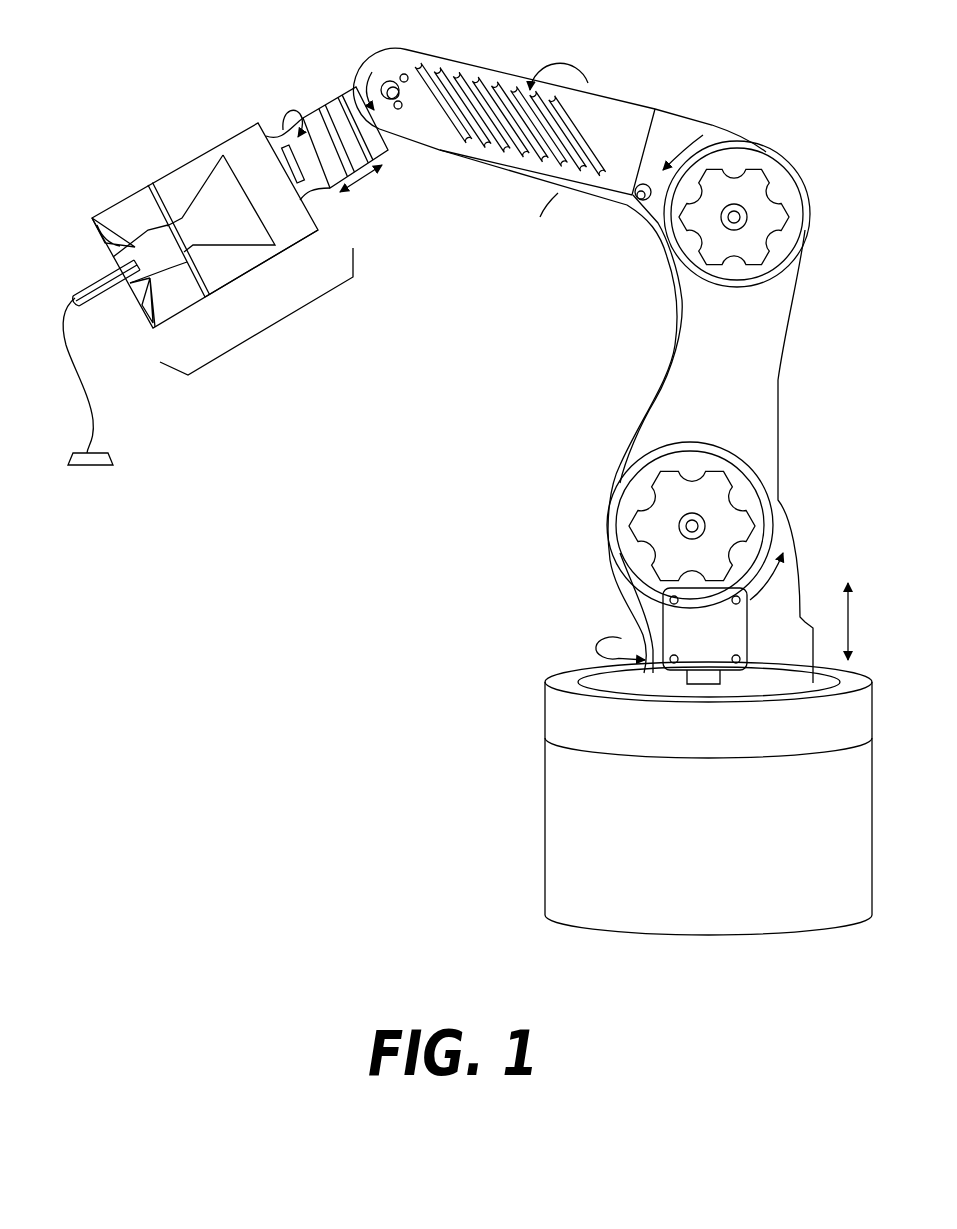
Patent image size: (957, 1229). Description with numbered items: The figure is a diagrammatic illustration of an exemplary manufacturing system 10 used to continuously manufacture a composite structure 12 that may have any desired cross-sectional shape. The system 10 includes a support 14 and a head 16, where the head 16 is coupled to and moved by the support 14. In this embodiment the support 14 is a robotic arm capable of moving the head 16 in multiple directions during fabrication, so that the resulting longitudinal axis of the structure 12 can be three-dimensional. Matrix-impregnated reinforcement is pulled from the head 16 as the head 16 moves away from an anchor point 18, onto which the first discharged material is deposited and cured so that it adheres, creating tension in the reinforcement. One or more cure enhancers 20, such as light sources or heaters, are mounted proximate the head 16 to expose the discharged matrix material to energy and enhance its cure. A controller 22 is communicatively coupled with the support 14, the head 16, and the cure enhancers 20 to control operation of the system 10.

The system 10 is at (375, 703).
The composite structure 12 is at (95, 423).
The support 14 is at (729, 410).
The head 16 is at (283, 325).
The anchor point 18 is at (85, 465).
The cure enhancer 20 is at (113, 243).
The controller 22 is at (713, 643).